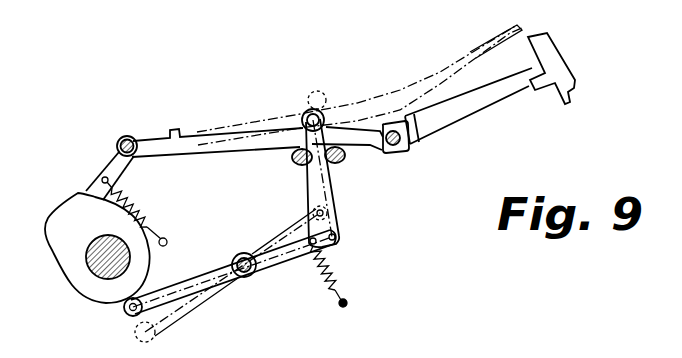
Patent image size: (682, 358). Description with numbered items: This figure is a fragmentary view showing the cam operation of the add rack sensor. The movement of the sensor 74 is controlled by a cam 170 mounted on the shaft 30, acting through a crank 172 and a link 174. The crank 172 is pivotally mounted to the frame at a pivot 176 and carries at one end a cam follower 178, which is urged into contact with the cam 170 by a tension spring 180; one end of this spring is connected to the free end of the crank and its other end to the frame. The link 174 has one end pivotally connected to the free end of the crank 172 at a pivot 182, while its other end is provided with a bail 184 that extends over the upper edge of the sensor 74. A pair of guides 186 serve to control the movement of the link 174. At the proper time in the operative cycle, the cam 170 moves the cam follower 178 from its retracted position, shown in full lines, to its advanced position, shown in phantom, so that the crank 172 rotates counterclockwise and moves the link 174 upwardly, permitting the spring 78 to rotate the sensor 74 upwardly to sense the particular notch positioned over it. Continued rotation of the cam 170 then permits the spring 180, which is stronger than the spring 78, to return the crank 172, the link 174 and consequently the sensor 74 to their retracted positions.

The shaft 30 is at (103, 263).
The sensor 74 is at (255, 143).
The spring 78 is at (140, 207).
The cam 170 is at (75, 247).
The crank 172 is at (222, 278).
The link 174 is at (333, 202).
The crank pivot 176 is at (257, 272).
The cam follower 178 is at (123, 310).
The tension spring 180 is at (335, 274).
The link pivot 182 is at (340, 235).
The bail 184 is at (323, 121).
The guides 186 is at (342, 161).